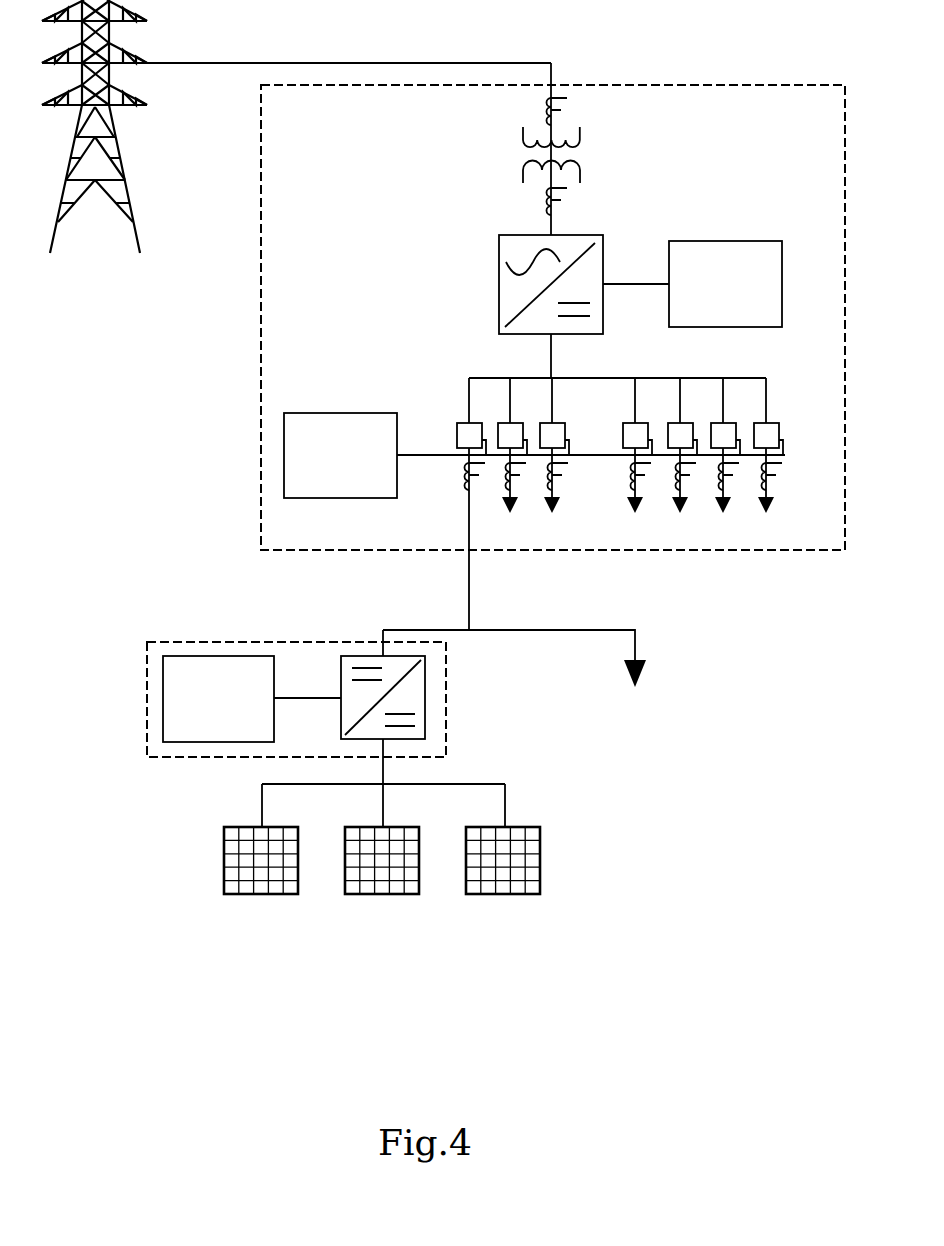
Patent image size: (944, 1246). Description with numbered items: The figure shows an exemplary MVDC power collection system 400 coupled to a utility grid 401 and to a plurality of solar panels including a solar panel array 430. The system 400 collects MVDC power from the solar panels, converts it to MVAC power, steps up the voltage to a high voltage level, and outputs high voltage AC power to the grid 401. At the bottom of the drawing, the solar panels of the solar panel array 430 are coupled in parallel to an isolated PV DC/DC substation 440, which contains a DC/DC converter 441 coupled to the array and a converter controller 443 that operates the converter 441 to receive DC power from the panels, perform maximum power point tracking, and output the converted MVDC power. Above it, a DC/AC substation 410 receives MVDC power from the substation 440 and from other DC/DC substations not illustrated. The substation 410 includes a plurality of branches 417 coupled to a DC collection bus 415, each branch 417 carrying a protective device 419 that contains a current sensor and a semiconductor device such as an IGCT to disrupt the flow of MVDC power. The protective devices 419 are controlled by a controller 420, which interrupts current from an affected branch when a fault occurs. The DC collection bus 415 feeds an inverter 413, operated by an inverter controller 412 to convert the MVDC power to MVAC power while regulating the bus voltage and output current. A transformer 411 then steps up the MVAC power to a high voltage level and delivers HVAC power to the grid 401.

The MVDC power collection system 400 is at (656, 888).
The utility grid 401 is at (148, 21).
The DC/AC substation 410 is at (772, 85).
The transformer 411 is at (581, 140).
The inverter controller 412 is at (725, 284).
The inverter 413 is at (499, 252).
The DC collection bus 415 is at (489, 378).
The branches 417 is at (466, 381).
The protective devices 419 is at (446, 430).
The controller 420 is at (340, 455).
The solar panel array 430 is at (234, 915).
The PV DC/DC substation 440 is at (292, 642).
The DC/DC converter 441 is at (341, 675).
The converter controller 443 is at (218, 699).